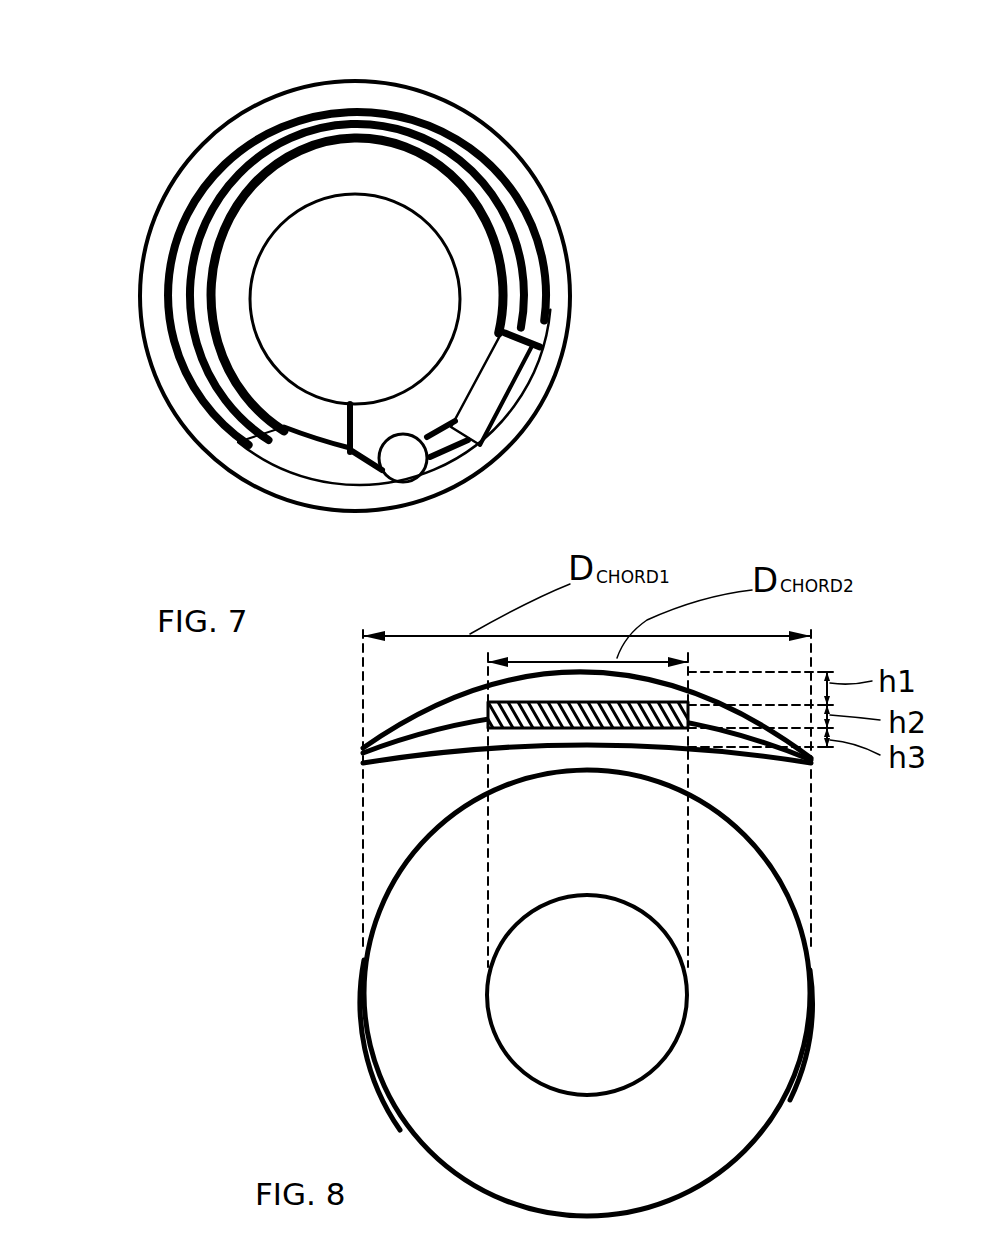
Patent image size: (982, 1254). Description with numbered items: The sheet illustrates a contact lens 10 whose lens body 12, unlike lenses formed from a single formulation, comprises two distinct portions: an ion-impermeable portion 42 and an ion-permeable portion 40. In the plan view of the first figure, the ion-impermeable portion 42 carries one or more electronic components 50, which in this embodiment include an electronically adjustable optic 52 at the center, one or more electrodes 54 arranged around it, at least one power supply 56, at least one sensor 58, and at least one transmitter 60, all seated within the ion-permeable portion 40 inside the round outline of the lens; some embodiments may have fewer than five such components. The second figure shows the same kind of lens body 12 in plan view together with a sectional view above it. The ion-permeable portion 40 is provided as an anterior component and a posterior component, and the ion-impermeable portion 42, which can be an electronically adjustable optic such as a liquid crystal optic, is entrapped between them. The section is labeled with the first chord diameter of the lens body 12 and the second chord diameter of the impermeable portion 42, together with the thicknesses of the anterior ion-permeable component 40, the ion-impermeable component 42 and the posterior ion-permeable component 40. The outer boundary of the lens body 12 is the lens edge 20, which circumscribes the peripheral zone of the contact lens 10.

In FIG. 7, the contact lens 10 is at (145, 104).
In FIG. 8, the contact lens 10 is at (279, 771).
In FIG. 8, the lens body 12 is at (410, 1037).
In FIG. 8, the lens edge 20 is at (815, 1040).
In FIG. 7, the ion-permeable portion 40 is at (452, 114).
In FIG. 8, the ion-permeable portion 40 is at (420, 710).
In FIG. 7, the ion-impermeable portion 42 is at (302, 306).
In FIG. 8, the ion-impermeable portion 42 is at (632, 731).
In FIG. 7, the electronic components 50 is at (523, 308).
In FIG. 7, the electronically adjustable optic 52 is at (432, 263).
In FIG. 7, the electrodes 54 is at (540, 345).
In FIG. 7, the power supply 56 is at (488, 393).
In FIG. 7, the sensor 58 is at (406, 468).
In FIG. 7, the transmitter 60 is at (302, 467).